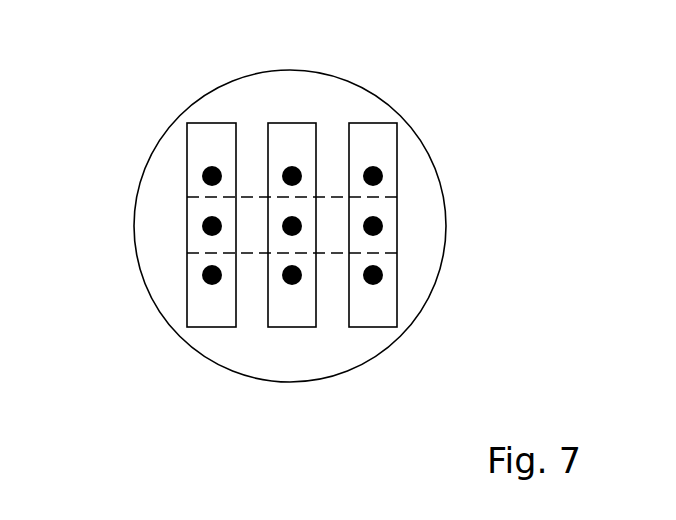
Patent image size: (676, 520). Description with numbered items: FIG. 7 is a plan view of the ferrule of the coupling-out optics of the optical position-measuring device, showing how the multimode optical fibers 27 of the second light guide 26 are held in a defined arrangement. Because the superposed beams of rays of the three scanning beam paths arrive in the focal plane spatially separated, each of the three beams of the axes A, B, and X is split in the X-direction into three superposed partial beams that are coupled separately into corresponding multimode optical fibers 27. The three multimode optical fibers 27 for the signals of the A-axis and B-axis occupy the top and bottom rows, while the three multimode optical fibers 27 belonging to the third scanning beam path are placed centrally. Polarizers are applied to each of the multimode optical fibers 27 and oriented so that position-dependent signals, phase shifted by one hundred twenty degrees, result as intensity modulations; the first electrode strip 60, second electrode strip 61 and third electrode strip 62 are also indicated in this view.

The second light guide 26 is at (148, 112).
The multimode optical fibers 27 is at (423, 273).
The first electrode strip 60 is at (210, 135).
The second electrode strip 61 is at (290, 133).
The third electrode strip 62 is at (373, 133).